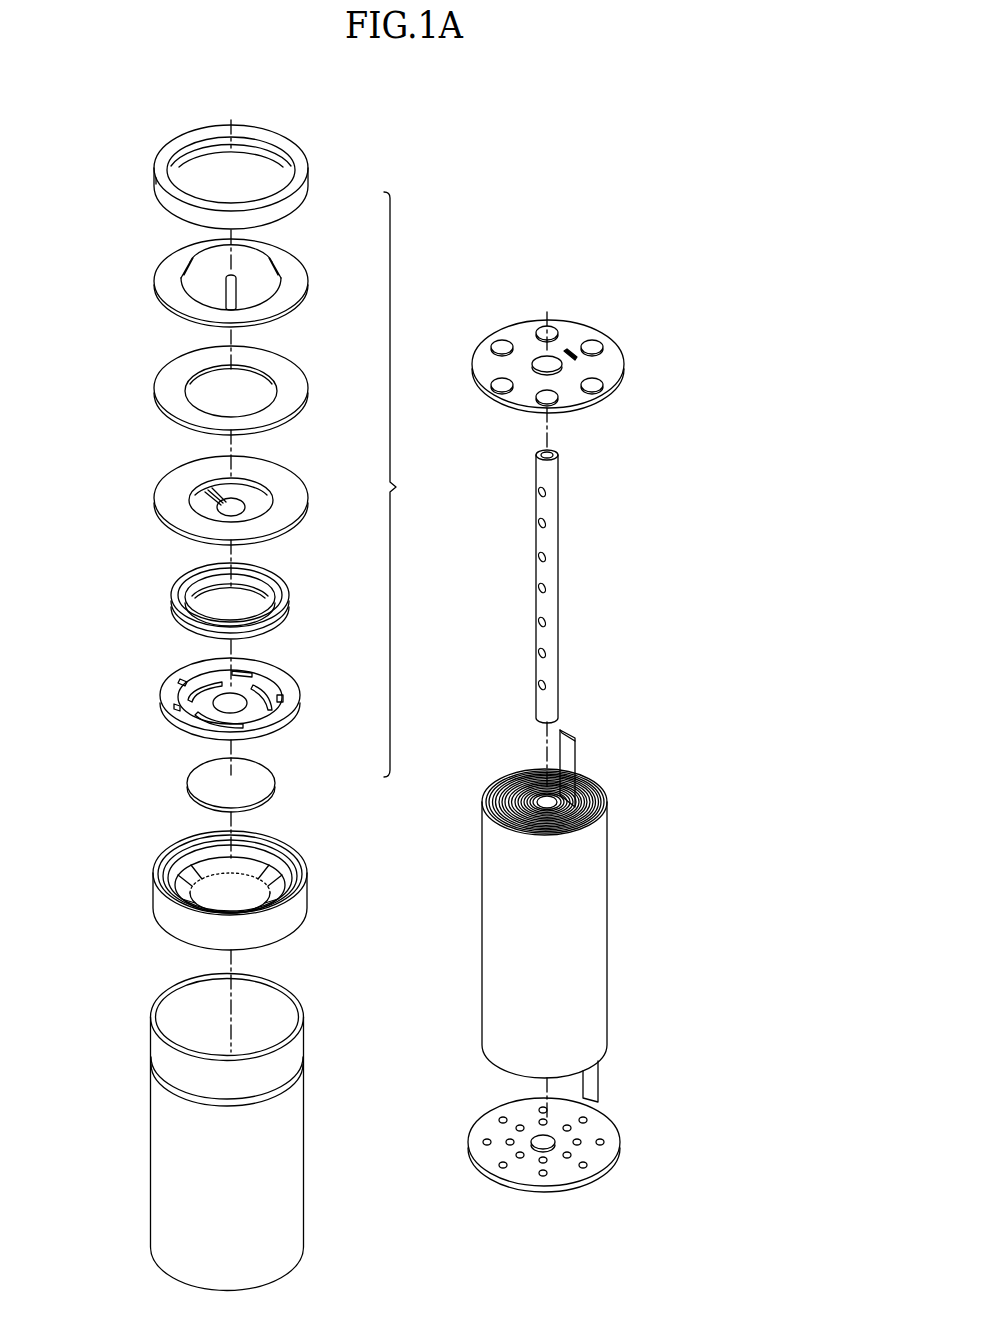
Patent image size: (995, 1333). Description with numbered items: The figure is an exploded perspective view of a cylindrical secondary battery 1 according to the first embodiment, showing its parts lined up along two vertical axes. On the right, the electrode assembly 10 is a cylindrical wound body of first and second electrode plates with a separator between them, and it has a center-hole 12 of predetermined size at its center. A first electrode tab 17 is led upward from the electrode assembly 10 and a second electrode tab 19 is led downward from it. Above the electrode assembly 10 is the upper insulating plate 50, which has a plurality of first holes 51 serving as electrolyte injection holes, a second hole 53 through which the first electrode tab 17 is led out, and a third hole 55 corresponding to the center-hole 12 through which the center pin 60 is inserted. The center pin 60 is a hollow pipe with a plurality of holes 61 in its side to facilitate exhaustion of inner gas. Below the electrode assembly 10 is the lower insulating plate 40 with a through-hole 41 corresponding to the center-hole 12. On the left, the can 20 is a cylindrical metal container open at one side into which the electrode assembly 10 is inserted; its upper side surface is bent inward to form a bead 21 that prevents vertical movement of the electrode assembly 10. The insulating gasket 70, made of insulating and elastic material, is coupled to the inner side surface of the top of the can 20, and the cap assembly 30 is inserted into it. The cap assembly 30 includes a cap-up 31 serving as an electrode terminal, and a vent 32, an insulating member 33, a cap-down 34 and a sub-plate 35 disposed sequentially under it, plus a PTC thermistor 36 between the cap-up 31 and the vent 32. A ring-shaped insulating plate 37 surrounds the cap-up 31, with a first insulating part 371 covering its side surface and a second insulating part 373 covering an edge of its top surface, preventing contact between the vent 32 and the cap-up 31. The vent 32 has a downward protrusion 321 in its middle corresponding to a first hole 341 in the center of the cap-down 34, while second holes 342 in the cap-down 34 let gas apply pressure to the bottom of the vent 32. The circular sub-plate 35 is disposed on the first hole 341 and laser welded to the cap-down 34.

The secondary battery 1 is at (92, 114).
The electrode assembly 10 is at (598, 916).
The center-hole 12 is at (558, 801).
The first electrode tab 17 is at (578, 740).
The second electrode tab 19 is at (600, 1068).
The can 20 is at (269, 1132).
The bead 21 is at (298, 1065).
The cap assembly 30 is at (406, 484).
The cap-up 31 is at (295, 268).
The vent 32 is at (270, 489).
The protrusion 321 is at (237, 505).
The insulating member 33 is at (286, 590).
The cap-down 34 is at (249, 686).
The first hole 341 is at (222, 696).
The second holes 342 is at (195, 716).
The sub-plate 35 is at (262, 775).
The PTC thermistor 36 is at (297, 373).
The insulating plate 37 is at (320, 184).
The first insulating part 371 is at (163, 210).
The second insulating part 373 is at (288, 148).
The lower insulating plate 40 is at (571, 1145).
The through-hole 41 is at (553, 1140).
The upper insulating plate 50 is at (578, 339).
The first holes 51 is at (592, 347).
The second hole 53 is at (573, 352).
The third hole 55 is at (540, 362).
The center pin 60 is at (581, 586).
The holes 61 is at (546, 523).
The insulating gasket 70 is at (298, 895).